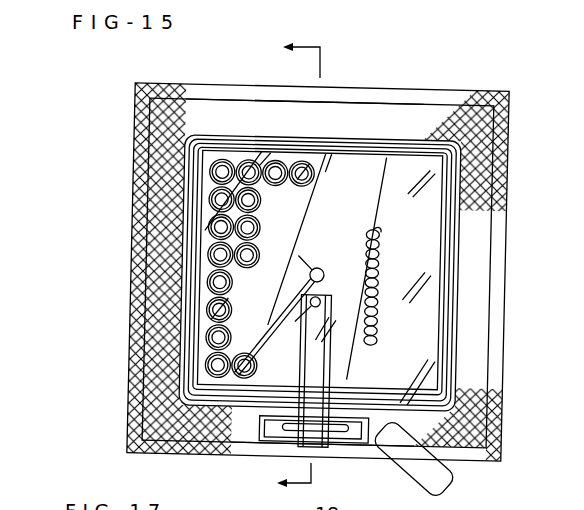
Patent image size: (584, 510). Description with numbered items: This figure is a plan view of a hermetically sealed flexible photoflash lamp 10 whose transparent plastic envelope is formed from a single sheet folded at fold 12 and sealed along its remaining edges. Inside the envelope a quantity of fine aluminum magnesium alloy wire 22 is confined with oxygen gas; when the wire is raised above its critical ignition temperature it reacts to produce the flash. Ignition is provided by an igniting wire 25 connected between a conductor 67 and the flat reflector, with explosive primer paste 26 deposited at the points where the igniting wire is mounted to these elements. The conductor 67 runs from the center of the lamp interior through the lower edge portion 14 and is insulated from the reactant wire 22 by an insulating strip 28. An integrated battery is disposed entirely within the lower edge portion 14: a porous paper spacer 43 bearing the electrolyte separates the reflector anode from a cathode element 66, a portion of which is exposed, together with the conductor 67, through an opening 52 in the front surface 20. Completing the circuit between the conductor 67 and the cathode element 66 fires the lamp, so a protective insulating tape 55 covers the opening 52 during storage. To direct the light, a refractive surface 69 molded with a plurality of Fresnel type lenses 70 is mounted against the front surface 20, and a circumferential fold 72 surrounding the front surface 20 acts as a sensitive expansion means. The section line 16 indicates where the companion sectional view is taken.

The sealed flexible photoflash lamp 10 is at (127, 99).
The fold 12 is at (210, 84).
The lower edge portion 14 is at (184, 440).
The section line 16- 16 is at (314, 265).
The front surface 20 is at (430, 351).
The aluminum magnesium alloy wire 22 is at (380, 232).
The igniting wire 25 is at (304, 288).
The explosive primer paste 26 is at (322, 269).
The insulating strip 28 is at (313, 367).
The porous paper spacer 43 is at (338, 441).
The opening 52 is at (284, 425).
The protective insulating tape 55 is at (449, 483).
The cathode element 66 is at (291, 430).
The conductor 67 is at (302, 342).
The refractive surface 69 is at (446, 262).
The Fresnel type lenses 70 is at (260, 203).
The circumferential fold 72 is at (383, 133).